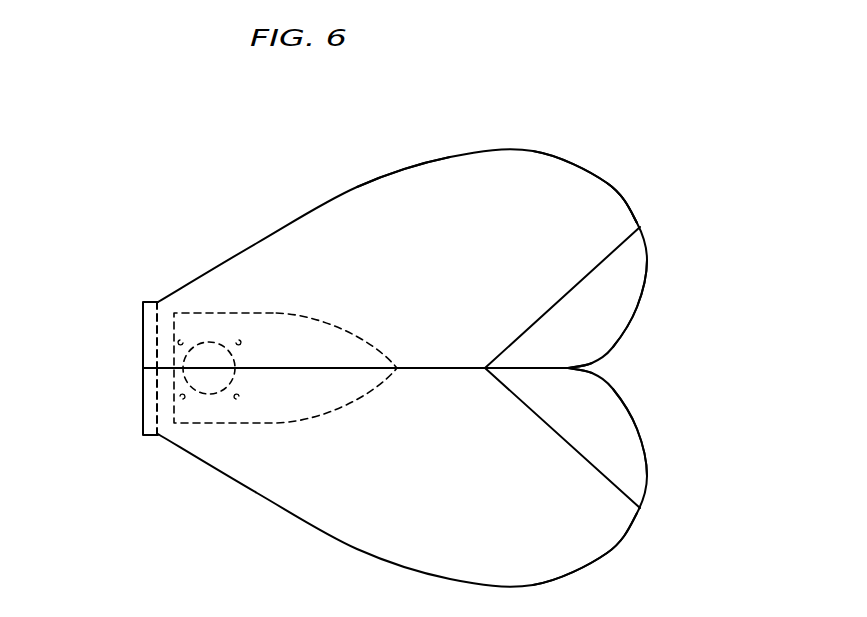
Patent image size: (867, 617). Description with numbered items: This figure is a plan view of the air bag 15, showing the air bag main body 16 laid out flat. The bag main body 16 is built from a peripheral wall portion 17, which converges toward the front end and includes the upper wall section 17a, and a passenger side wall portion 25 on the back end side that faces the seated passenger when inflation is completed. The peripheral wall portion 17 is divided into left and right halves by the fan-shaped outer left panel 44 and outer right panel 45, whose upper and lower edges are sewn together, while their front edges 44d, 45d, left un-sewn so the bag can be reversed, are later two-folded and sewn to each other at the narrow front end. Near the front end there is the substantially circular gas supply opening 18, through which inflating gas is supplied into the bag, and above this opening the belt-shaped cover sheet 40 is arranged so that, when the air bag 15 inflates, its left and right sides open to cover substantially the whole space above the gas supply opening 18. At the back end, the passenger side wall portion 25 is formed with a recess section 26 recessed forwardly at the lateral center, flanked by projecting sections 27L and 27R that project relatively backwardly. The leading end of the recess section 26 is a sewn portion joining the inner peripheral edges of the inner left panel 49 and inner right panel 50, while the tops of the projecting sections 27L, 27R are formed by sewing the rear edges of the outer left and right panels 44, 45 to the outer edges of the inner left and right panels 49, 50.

The peripheral wall portion 17 is at (355, 185).
The upper wall section 17a is at (410, 222).
The cover sheet 40 is at (273, 313).
The gas supply opening 18 is at (209, 352).
The outer right panel 45 is at (557, 147).
The outer left panel 44 is at (555, 588).
The air bag 15 is at (705, 183).
The air bag main body 16 is at (652, 182).
The right projecting section 27R is at (648, 228).
The left projecting section 27L is at (648, 507).
The inner right panel 50 is at (628, 292).
The inner left panel 49 is at (628, 445).
The recess section 26 is at (597, 367).
The passenger side wall portion 25 is at (652, 368).
The front edge of the outer right panel 45d is at (147, 333).
The front edge of the outer left panel 44d is at (147, 403).